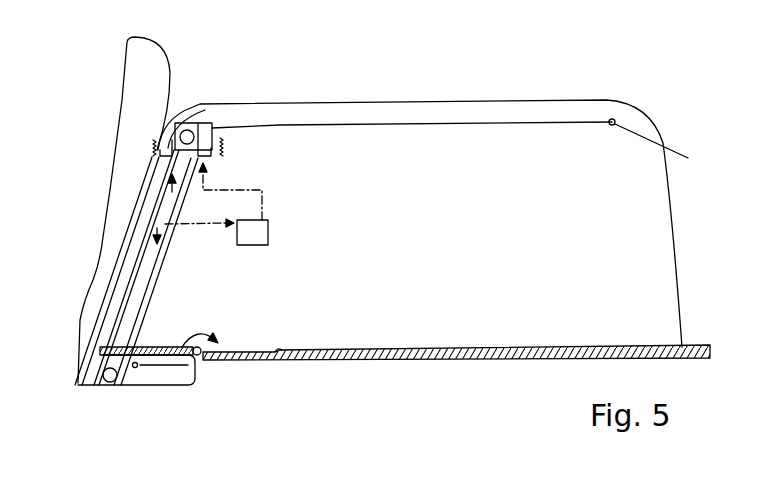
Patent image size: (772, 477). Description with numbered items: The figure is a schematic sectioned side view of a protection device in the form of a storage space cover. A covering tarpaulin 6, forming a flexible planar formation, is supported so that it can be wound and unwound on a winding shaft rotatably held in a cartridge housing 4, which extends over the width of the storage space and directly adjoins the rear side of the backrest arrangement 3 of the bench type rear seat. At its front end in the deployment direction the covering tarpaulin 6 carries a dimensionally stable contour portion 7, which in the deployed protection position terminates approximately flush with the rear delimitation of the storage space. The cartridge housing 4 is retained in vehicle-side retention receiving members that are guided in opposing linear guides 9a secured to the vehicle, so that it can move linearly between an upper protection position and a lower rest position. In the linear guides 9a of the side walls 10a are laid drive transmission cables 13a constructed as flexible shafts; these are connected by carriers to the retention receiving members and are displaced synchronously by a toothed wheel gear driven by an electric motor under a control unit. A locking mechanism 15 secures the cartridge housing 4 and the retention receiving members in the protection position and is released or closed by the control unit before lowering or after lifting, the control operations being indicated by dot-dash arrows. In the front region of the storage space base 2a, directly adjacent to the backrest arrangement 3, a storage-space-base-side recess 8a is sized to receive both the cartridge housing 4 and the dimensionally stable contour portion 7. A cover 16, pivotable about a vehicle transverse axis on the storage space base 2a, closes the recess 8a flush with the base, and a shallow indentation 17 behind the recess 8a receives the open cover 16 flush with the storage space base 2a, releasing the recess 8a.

The backrest arrangement 3 is at (160, 83).
The cartridge housing 4 is at (200, 125).
The covering tarpaulin 6 is at (407, 123).
The dimensionally stable contour portion 7 is at (632, 130).
The linear guides 9a is at (133, 317).
The locking mechanism 15 is at (157, 153).
The drive transmission cables 13a is at (165, 224).
The side walls 10a is at (486, 270).
The storage space base 2a is at (397, 352).
The shallow indentation 17 is at (272, 352).
The cover 16 is at (157, 343).
The storage-space-base-side recess 8a is at (176, 380).